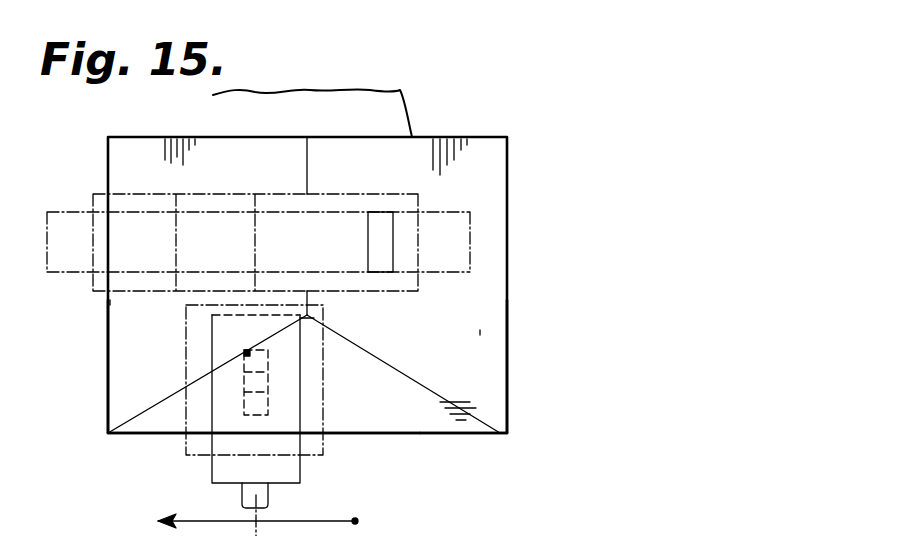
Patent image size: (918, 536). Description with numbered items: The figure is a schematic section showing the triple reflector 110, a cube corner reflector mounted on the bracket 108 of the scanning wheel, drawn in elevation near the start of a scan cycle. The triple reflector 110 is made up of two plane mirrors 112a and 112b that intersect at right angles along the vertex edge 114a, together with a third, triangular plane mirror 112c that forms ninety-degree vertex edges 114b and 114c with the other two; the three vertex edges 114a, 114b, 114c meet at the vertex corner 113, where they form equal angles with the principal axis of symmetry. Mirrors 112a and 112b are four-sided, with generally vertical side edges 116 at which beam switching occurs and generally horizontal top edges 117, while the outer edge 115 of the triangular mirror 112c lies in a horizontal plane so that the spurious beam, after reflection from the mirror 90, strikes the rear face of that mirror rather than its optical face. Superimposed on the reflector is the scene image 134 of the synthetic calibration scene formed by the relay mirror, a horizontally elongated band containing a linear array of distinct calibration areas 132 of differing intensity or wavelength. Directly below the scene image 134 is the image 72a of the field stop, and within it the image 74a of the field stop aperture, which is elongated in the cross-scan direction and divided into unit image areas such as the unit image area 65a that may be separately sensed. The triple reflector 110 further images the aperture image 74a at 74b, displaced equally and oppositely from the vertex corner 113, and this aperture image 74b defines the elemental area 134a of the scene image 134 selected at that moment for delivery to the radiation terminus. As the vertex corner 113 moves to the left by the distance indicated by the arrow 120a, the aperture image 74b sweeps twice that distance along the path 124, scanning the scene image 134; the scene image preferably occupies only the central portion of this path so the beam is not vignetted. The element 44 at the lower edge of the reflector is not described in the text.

The triple reflector 110 is at (509, 276).
The bracket 108 is at (418, 118).
The top edges 117 is at (150, 137).
The vertex edge 114a is at (307, 150).
The image of field stop aperture 74b is at (412, 238).
The distinct areas 132 is at (170, 195).
The path 124 is at (473, 236).
The elemental area 134a is at (380, 210).
The scene image 134 is at (125, 195).
The plane mirror 112a is at (165, 328).
The plane mirror 112b is at (478, 344).
The third plane mirror 112c is at (415, 424).
The side edges 116 is at (509, 330).
The vertex edge 114c is at (140, 418).
The vertex edge 114b is at (480, 432).
The vertex corner 113 is at (318, 317).
The outer edge 115 is at (442, 435).
The image of field stop 72a is at (186, 346).
The image of field stop aperture 74a is at (305, 440).
The unit image area 65a is at (270, 396).
The base 44 is at (178, 434).
The mirror 90 is at (300, 480).
The arrow 120a is at (172, 520).